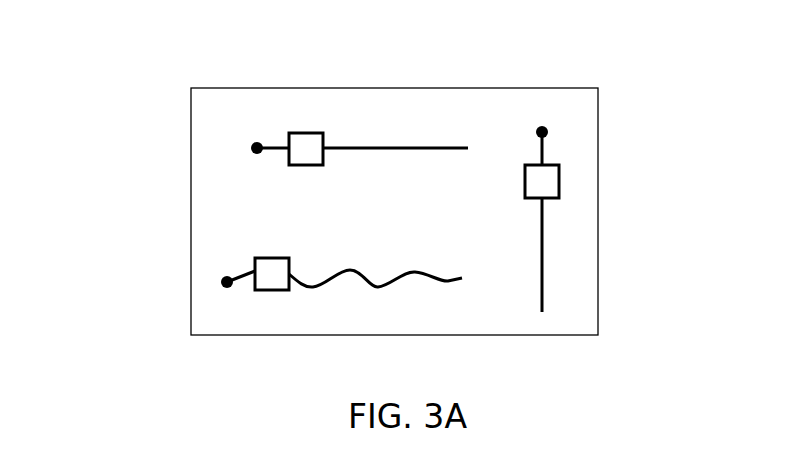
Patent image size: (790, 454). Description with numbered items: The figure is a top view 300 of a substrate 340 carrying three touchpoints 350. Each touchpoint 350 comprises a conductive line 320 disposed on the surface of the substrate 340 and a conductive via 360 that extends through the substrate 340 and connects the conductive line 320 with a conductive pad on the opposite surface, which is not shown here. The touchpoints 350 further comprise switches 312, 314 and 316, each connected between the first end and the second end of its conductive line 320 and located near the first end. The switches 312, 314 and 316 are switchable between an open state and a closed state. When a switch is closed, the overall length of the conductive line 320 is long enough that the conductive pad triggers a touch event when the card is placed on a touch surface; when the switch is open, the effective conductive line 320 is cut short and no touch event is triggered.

The top view 300 is at (140, 45).
The switch 312 is at (275, 278).
The switch 314 is at (307, 143).
The switch 316 is at (555, 180).
The conductive line 320 is at (448, 147).
The substrate 340 is at (583, 103).
The touchpoint 350 is at (397, 133).
The conductive via 360 is at (257, 148).